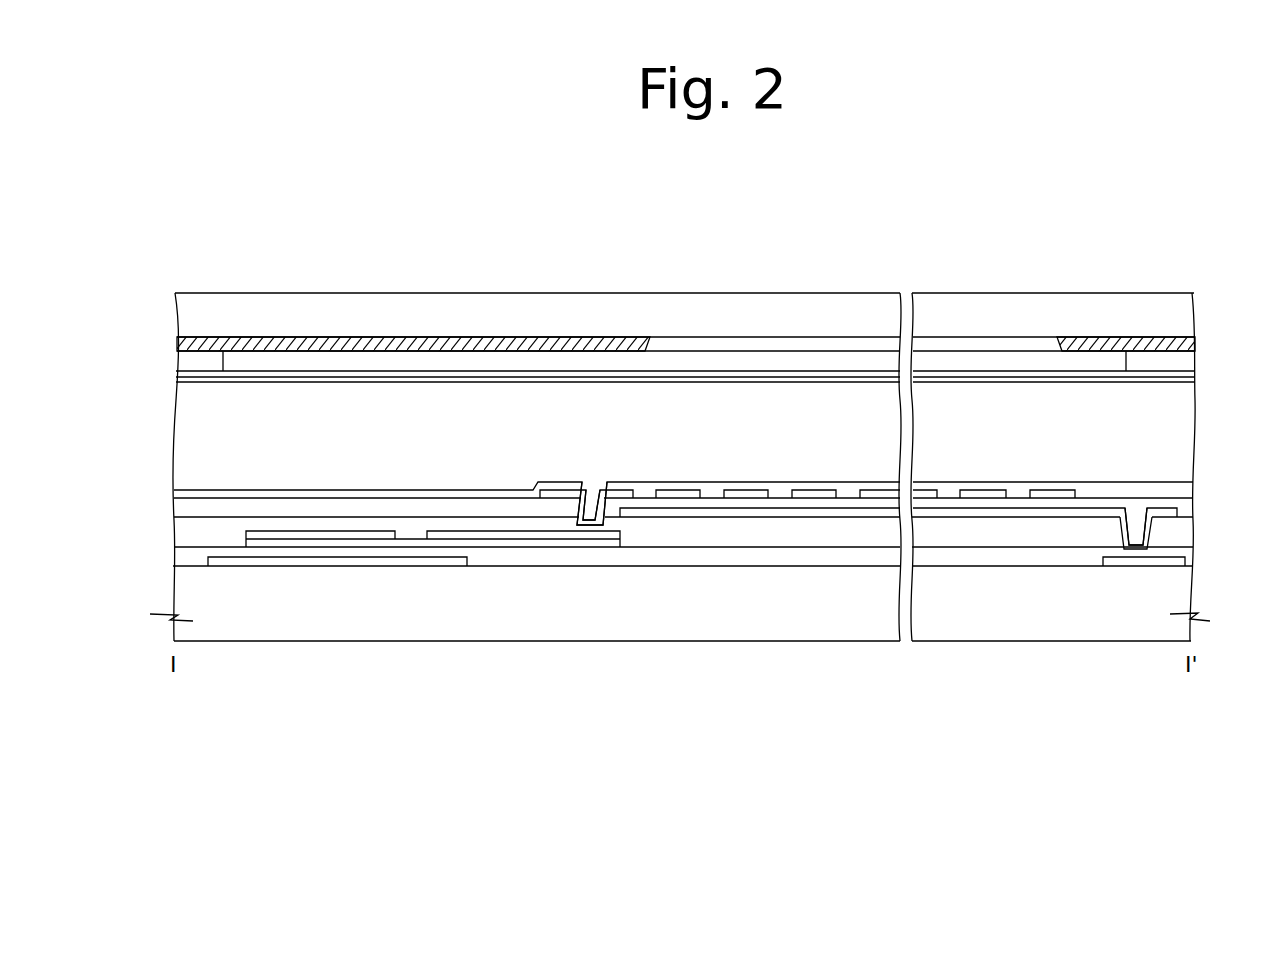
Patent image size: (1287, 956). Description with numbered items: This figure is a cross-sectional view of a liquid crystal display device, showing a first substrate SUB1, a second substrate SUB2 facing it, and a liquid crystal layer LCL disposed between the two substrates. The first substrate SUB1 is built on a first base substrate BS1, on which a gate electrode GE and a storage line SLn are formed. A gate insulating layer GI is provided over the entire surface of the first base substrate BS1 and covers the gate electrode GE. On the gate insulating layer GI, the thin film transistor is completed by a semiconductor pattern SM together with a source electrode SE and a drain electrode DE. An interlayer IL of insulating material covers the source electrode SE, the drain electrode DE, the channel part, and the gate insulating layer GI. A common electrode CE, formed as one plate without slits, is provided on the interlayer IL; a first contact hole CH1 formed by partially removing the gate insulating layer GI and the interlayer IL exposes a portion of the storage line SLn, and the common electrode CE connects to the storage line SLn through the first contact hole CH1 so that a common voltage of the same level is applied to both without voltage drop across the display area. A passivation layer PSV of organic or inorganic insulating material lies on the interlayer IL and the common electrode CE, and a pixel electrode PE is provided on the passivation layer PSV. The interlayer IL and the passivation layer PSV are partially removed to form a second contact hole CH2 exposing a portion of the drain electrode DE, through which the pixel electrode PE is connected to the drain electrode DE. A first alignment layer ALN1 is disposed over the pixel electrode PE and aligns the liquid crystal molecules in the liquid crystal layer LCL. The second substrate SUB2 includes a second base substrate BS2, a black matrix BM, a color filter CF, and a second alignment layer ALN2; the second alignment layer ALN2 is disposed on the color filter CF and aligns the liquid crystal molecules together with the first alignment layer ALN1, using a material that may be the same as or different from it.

The second substrate SUB2 is at (163, 293).
The second base substrate BS2 is at (1183, 315).
The black matrix BM is at (438, 336).
The color filter CF is at (1182, 358).
The second alignment layer ALN2 is at (1187, 378).
The liquid crystal layer LCL is at (187, 441).
The first substrate SUB1 is at (160, 490).
The first base substrate BS1 is at (1175, 598).
The gate insulating layer GI is at (1188, 558).
The interlayer IL is at (1188, 535).
The passivation layer PSV is at (1187, 506).
The first alignment layer ALN1 is at (1180, 490).
The pixel electrode PE is at (678, 494).
The second contact hole CH2 is at (605, 506).
The common electrode CE is at (1040, 513).
The first contact hole CH1 is at (1150, 528).
The source electrode SE is at (331, 536).
The drain electrode DE is at (459, 536).
The semiconductor pattern SM is at (398, 543).
The gate electrode GE is at (263, 562).
The storage line SLn is at (1135, 561).